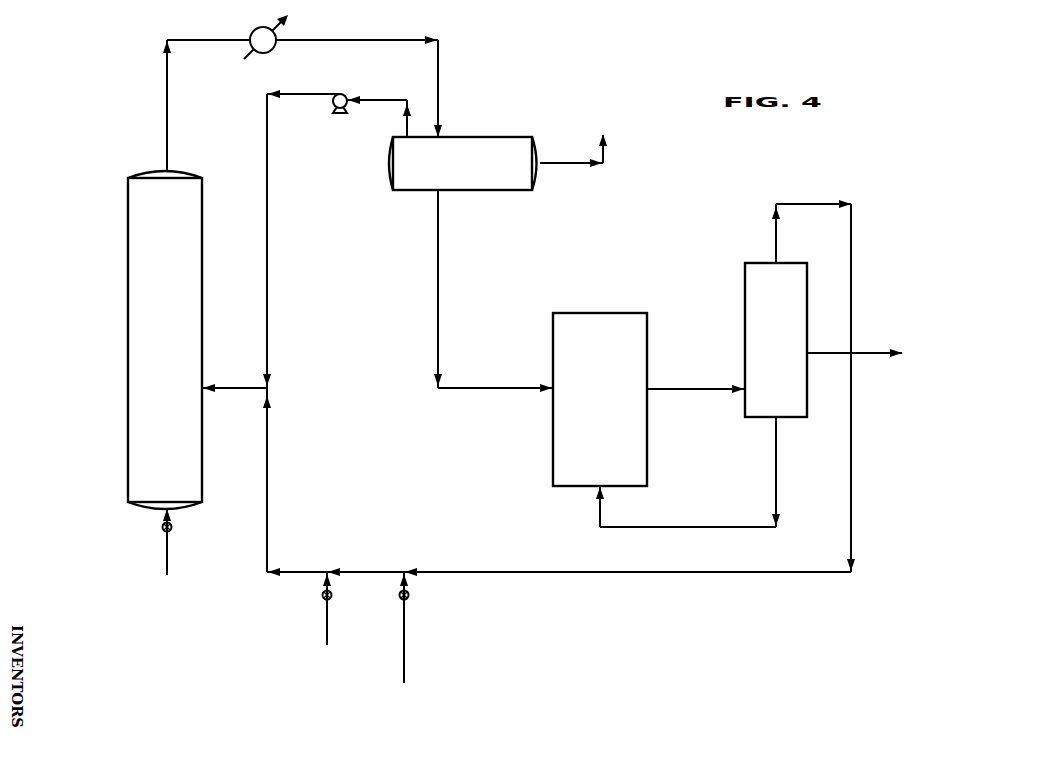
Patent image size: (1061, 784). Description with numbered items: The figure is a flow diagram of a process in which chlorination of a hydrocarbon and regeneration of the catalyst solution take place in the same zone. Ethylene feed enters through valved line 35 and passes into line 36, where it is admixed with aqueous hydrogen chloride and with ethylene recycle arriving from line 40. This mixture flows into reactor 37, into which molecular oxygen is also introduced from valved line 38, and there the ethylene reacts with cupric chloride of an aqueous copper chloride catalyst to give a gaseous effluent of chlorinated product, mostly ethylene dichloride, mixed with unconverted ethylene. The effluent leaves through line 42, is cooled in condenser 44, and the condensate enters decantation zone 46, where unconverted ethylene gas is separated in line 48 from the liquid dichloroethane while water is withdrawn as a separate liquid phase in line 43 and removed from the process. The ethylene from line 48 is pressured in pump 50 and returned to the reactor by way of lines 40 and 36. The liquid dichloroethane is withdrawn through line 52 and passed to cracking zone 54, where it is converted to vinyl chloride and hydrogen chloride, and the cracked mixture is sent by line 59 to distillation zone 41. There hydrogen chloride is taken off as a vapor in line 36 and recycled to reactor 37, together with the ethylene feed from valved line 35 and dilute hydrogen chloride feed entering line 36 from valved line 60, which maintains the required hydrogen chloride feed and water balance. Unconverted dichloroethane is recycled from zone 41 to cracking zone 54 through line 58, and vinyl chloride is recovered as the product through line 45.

The valved line 35 is at (326, 620).
The line 36 is at (824, 204).
The reactor 37 is at (118, 268).
The valved line 38 is at (167, 555).
The line 40 is at (311, 94).
The distillation zone 41 is at (736, 289).
The line 42 is at (166, 103).
The line 43 is at (572, 163).
The condenser 44 is at (251, 33).
The line 45 is at (873, 355).
The decantation zone 46 is at (461, 135).
The line 48 is at (392, 100).
The pump 50 is at (343, 115).
The line 52 is at (437, 313).
The cracking zone 54 is at (531, 456).
The line 58 is at (776, 497).
The line 59 is at (692, 390).
The valved line 60 is at (405, 617).